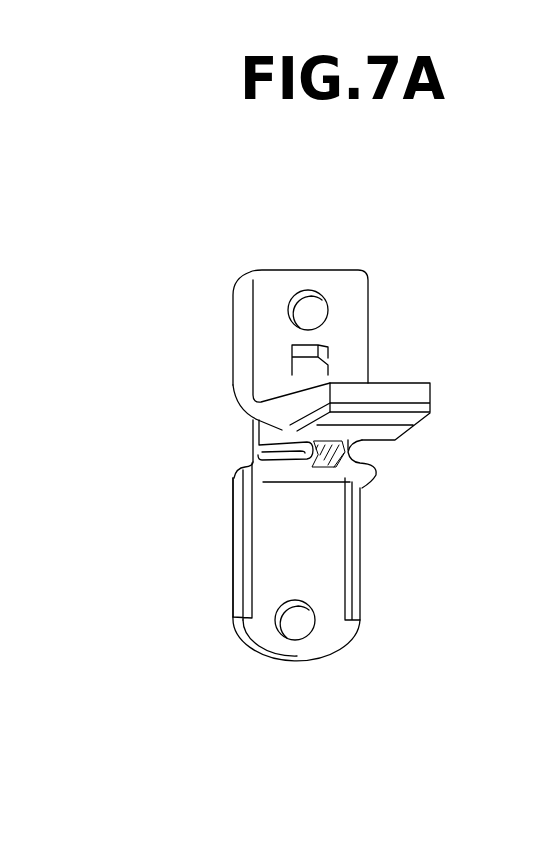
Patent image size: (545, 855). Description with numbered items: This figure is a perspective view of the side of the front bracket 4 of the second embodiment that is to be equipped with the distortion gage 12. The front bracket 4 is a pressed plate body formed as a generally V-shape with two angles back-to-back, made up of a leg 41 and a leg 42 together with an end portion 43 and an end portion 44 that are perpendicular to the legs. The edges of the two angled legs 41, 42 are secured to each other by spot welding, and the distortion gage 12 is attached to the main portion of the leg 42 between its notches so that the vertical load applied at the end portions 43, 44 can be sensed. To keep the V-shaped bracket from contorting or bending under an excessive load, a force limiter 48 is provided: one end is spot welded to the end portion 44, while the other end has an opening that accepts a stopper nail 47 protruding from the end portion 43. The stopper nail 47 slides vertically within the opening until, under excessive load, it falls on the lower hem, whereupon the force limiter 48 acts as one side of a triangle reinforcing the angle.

The front bracket 4 is at (379, 271).
The distortion gage 12 is at (333, 467).
The leg 41 is at (413, 395).
The leg 42 is at (412, 420).
The end portion 43 is at (242, 292).
The end portion 44 is at (243, 633).
The stopper nail 47 is at (323, 340).
The force limiter 48 is at (250, 448).